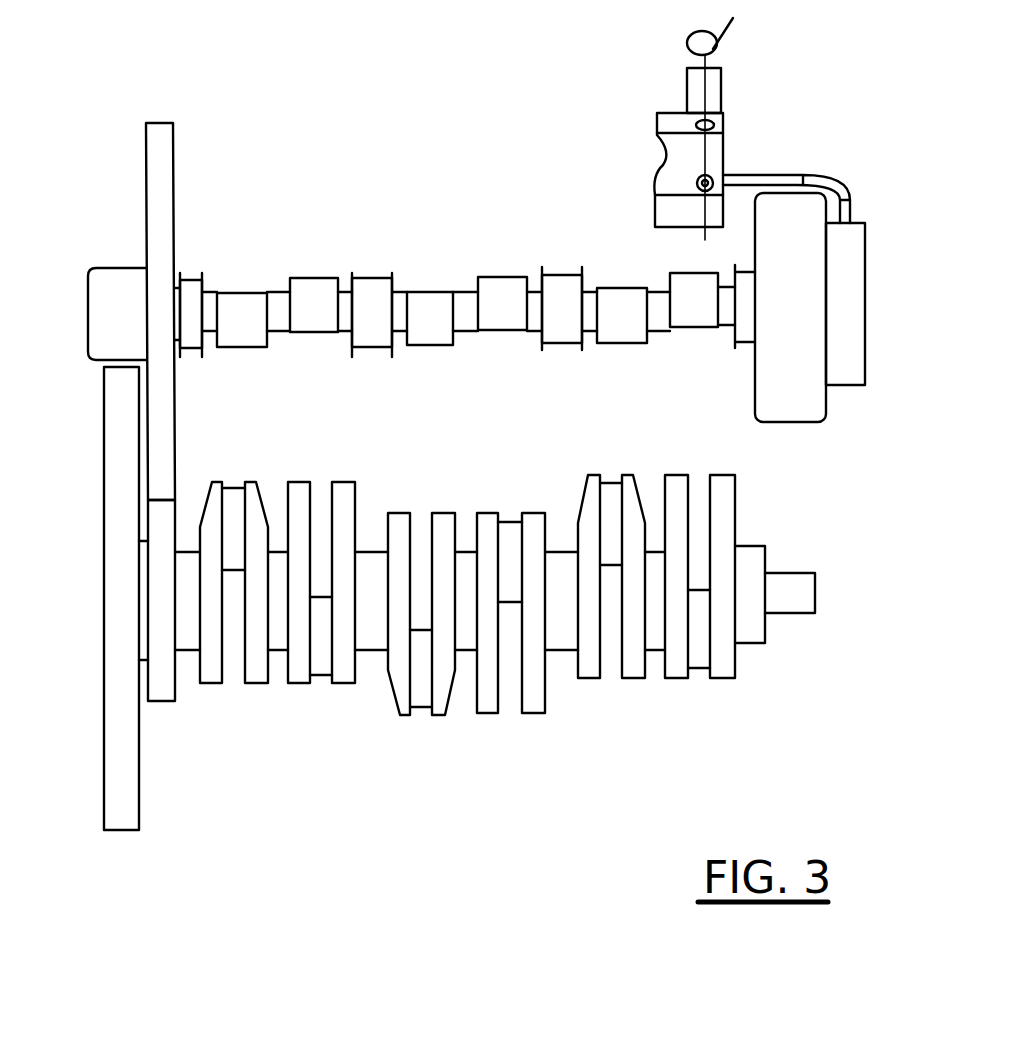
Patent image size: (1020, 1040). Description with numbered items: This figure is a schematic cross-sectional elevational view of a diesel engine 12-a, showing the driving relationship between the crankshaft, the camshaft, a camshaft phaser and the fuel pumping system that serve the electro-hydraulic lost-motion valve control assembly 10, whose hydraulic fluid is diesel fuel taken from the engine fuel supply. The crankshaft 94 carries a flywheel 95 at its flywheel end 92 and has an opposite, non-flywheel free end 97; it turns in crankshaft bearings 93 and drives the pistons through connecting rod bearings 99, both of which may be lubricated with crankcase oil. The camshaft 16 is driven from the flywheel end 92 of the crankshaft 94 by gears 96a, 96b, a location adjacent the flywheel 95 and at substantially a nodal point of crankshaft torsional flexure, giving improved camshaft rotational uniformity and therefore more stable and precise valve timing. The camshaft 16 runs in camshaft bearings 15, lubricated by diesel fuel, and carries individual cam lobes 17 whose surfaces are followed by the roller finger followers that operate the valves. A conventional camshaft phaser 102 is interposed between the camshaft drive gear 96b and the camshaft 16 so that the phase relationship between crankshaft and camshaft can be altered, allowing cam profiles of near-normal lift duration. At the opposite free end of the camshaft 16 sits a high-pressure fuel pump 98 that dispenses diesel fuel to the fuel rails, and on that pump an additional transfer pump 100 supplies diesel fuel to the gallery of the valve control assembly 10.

The electro-hydraulic lost-motion valve control assembly 10 is at (740, 117).
The diesel engine 12-a is at (405, 167).
The camshaft bearings 15 is at (184, 282).
The camshaft 16 is at (465, 287).
The cam lobes 17 is at (240, 306).
The flywheel end 92 is at (93, 604).
The crankshaft bearings 93 is at (463, 637).
The crankshaft 94 is at (373, 650).
The flywheel 95 is at (119, 431).
The gear 96a is at (162, 540).
The camshaft drive gear 96b is at (165, 372).
The free end 97 is at (782, 568).
The high-pressure fuel pump 98 is at (783, 353).
The connecting rod bearings 99 is at (512, 542).
The transfer pump 100 is at (853, 313).
The camshaft phaser 102 is at (115, 302).